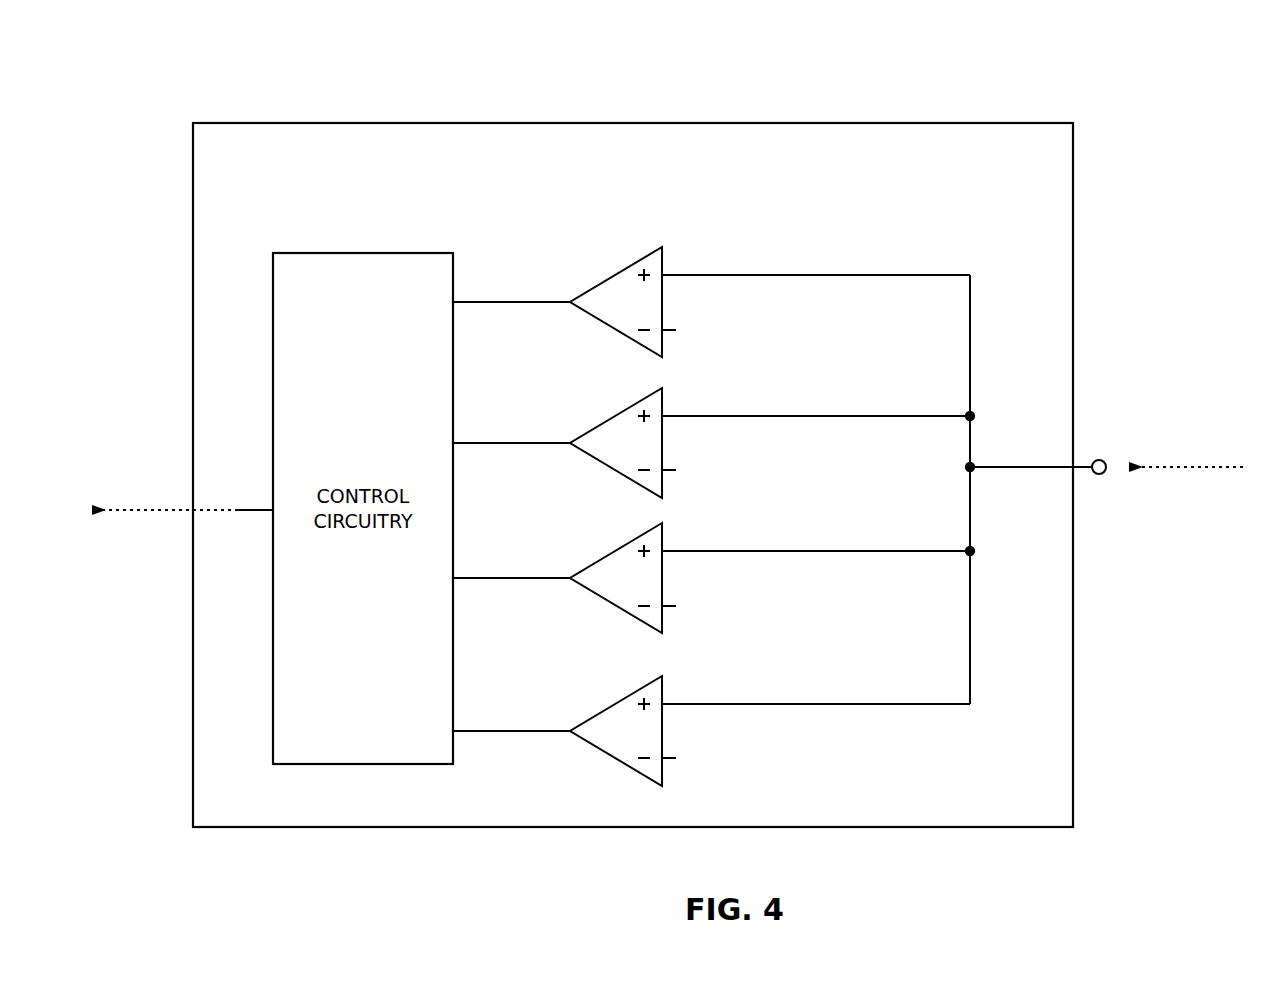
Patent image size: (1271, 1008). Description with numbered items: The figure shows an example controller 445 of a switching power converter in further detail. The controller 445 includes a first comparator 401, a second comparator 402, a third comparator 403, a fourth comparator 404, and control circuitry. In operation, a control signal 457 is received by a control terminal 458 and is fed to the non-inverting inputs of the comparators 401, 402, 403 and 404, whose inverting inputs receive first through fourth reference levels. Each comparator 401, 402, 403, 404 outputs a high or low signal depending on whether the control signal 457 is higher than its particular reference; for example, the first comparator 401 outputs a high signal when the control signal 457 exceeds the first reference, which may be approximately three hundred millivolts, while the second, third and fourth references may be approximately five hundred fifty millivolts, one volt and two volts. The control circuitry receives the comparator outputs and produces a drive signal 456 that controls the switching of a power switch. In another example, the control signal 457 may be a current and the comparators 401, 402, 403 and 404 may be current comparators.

The controller 445 is at (841, 108).
The first comparator 401 is at (598, 702).
The second comparator 402 is at (598, 552).
The third comparator 403 is at (592, 412).
The fourth comparator 404 is at (584, 278).
The drive signal UDRIVE 456 is at (148, 472).
The control signal UCON 457 is at (1200, 440).
The control terminal 458 is at (1108, 456).